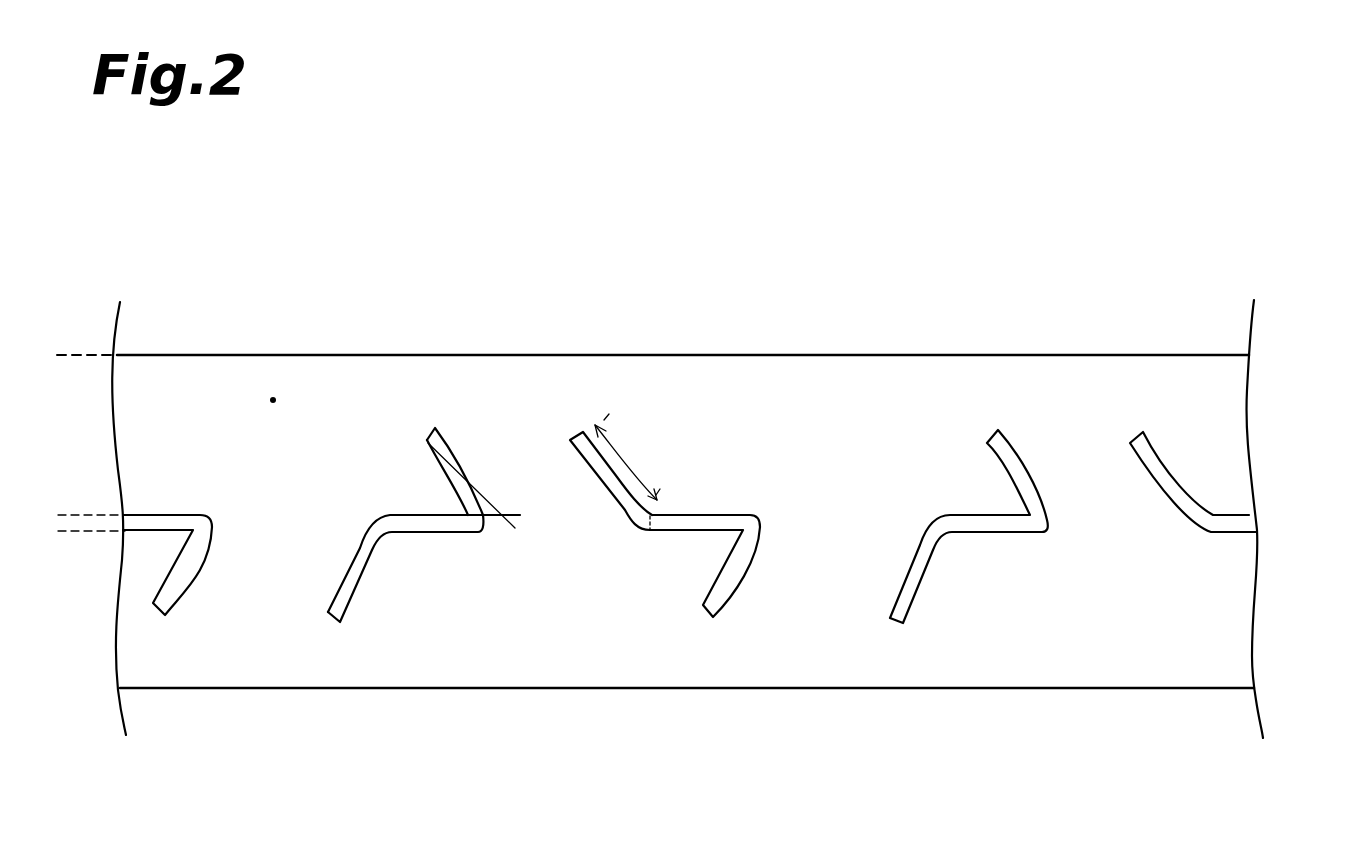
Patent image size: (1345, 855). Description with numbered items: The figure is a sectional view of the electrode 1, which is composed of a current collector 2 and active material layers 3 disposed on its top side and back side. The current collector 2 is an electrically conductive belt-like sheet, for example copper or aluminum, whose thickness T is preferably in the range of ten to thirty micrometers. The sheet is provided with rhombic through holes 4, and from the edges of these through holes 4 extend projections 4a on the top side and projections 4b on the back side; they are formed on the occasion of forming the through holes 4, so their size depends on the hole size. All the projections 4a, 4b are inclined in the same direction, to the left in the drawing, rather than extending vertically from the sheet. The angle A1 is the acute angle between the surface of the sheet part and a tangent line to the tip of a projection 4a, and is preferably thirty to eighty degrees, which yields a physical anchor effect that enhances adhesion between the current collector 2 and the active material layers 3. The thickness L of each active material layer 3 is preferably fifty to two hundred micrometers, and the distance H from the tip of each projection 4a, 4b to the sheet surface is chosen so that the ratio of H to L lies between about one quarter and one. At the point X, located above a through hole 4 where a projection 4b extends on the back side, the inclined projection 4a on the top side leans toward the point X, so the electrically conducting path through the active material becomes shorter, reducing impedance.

The electrode 1 is at (1273, 162).
The current collector 2 is at (1232, 524).
The active material layers 3 is at (1231, 609).
The through holes 4 is at (1111, 531).
The projections extending on the top side 4a is at (1150, 457).
The projections extending on the back side 4b is at (908, 585).
The distance between tip of projection and sheet surface H is at (427, 443).
The angle A1 is at (483, 515).
The thickness of active material layer L is at (95, 355).
The thickness T is at (73, 487).
The point X is at (276, 385).